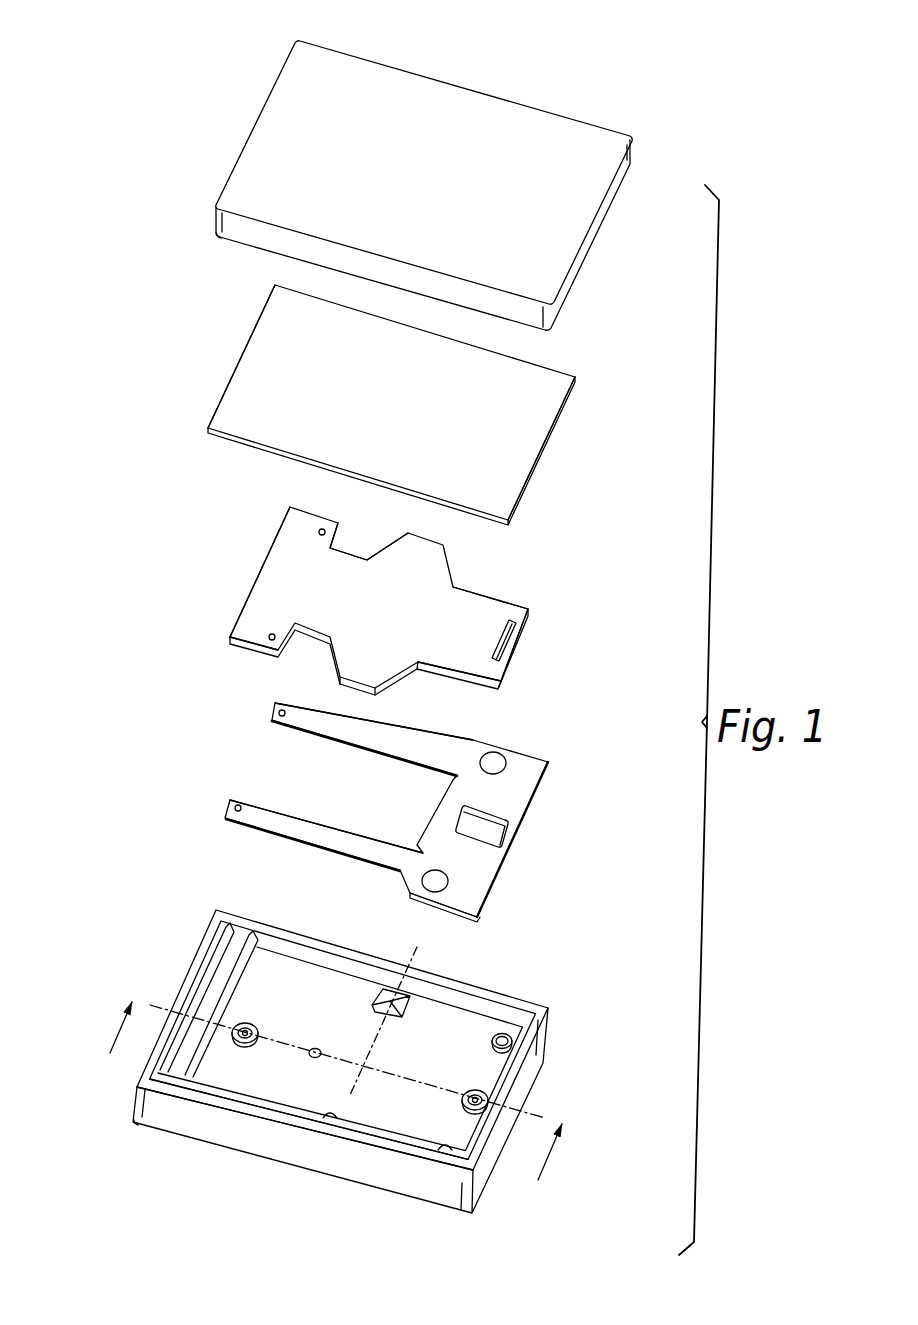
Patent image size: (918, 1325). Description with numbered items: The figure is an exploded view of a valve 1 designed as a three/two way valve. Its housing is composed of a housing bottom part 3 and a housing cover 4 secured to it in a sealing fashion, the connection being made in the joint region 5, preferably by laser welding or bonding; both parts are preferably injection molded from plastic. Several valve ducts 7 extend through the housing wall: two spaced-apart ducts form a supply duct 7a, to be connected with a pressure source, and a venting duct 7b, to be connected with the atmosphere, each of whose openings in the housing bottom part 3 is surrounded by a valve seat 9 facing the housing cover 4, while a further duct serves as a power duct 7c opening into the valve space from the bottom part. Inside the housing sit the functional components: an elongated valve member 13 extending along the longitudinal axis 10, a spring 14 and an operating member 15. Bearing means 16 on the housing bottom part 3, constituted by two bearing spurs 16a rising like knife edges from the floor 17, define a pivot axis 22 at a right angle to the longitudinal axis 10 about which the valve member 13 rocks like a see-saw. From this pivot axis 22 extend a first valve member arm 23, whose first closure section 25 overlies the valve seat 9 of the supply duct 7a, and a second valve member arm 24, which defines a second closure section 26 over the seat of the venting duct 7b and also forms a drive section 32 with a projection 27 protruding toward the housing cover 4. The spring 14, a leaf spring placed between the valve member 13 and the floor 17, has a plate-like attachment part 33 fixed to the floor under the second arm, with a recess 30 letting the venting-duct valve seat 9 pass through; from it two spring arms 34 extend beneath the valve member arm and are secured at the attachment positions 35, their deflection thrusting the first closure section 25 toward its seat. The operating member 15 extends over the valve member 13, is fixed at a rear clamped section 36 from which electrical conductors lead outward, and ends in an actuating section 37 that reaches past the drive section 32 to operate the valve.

The valve 1 is at (232, 118).
The housing bottom part 3 is at (230, 1145).
The housing cover 4 is at (507, 122).
The joint region 5 is at (223, 242).
The valve ducts 7 is at (378, 1109).
The supply duct 7a is at (247, 1030).
The venting duct 7b is at (478, 1102).
The power duct 7c is at (312, 1056).
The valve seat 9 is at (258, 1036).
The longitudinal axis 10 is at (353, 1063).
The valve member 13 is at (377, 577).
The spring 14 is at (523, 788).
The operating member 15 is at (533, 380).
The bearing means 16 is at (330, 1120).
The bearing spurs 16a is at (377, 997).
The floor 17 is at (397, 1127).
The pivot axis 22 is at (420, 956).
The first valve member arm 23 is at (266, 542).
The second valve member arm 24 is at (520, 595).
The first closure section 25 is at (248, 632).
The second closure section 26 is at (494, 671).
The projection 27 is at (513, 631).
The recess 30 is at (506, 825).
The drive section 32 is at (473, 634).
The attachment part 33 is at (485, 892).
The spring arms 34 is at (343, 738).
The attachment positions 35 is at (322, 536).
The clamped section 36 is at (247, 395).
The actuating section 37 is at (527, 438).